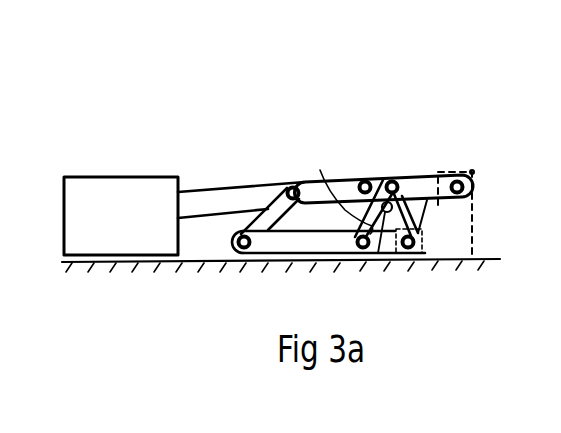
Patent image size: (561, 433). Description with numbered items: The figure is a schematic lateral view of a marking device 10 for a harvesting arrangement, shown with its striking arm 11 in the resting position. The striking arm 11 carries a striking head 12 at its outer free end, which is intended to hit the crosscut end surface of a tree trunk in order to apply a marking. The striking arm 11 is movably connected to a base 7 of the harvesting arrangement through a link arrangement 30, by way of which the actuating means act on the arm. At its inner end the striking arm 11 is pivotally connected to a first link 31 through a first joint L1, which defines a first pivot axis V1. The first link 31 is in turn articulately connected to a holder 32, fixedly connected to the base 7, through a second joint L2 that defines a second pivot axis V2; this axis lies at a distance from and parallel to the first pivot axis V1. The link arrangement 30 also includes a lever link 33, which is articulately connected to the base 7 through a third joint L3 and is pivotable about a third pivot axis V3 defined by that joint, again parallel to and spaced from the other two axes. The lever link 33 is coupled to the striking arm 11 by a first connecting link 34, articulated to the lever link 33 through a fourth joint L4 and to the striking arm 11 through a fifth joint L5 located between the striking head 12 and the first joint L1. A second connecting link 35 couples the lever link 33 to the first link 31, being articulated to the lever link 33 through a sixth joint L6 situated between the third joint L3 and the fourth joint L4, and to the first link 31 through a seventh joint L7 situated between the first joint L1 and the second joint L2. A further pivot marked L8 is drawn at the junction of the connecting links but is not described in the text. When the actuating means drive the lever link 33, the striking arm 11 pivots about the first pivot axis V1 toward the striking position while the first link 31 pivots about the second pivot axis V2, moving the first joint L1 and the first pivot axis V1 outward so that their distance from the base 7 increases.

The base 7 is at (492, 259).
The marking device 10 is at (306, 115).
The striking arm 11 is at (213, 190).
The striking head 12 is at (108, 188).
The link arrangement 30 is at (442, 148).
The first link 31 is at (425, 193).
The holder 32 is at (472, 216).
The lever link 33 is at (283, 257).
The first connecting link 34 is at (267, 208).
The second connecting link 35 is at (340, 191).
The first joint L1 is at (360, 178).
The second joint L2 is at (472, 173).
The third joint L3 is at (422, 258).
The fourth joint L4 is at (240, 256).
The fifth joint L5 is at (282, 186).
The sixth joint L6 is at (350, 258).
The seventh joint L7 is at (398, 176).
The link L8 is at (378, 258).
The first pivot axis V1 is at (380, 175).
The second pivot axis V2 is at (472, 170).
The third pivot axis V3 is at (410, 258).